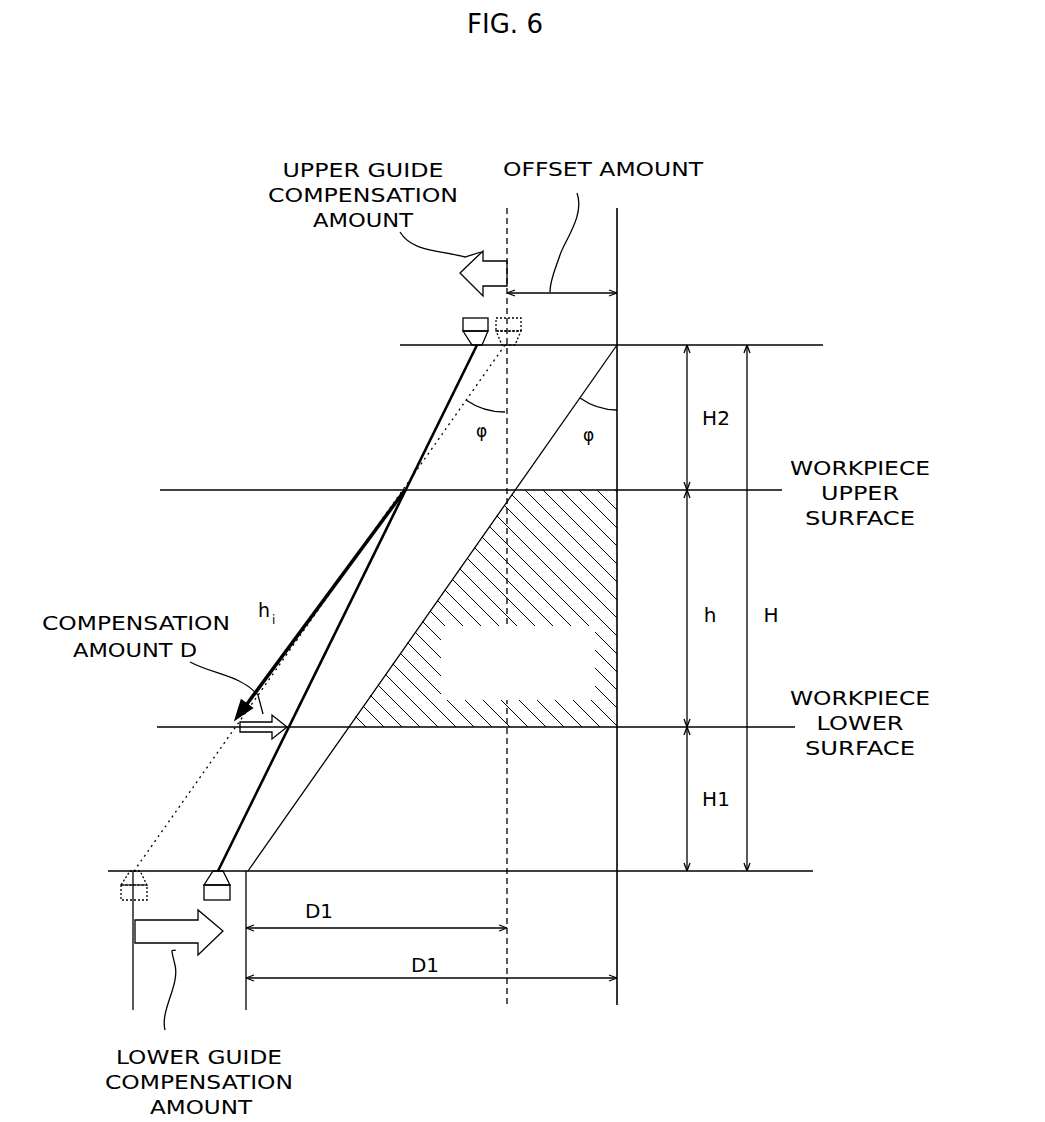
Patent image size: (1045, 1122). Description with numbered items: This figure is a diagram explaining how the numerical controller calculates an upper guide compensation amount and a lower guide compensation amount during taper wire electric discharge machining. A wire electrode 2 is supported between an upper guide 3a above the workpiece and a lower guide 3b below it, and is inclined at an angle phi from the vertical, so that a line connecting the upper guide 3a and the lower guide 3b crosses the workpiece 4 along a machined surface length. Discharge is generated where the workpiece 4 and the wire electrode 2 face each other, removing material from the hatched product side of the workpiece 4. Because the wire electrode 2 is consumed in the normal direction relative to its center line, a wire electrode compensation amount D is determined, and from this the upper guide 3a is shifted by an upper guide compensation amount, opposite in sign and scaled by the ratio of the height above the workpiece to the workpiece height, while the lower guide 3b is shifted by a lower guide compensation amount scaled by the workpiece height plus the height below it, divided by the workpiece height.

The wire electrode 2 is at (448, 403).
The upper guide 3a is at (461, 323).
The lower guide 3b is at (207, 895).
The workpiece 4 is at (464, 729).